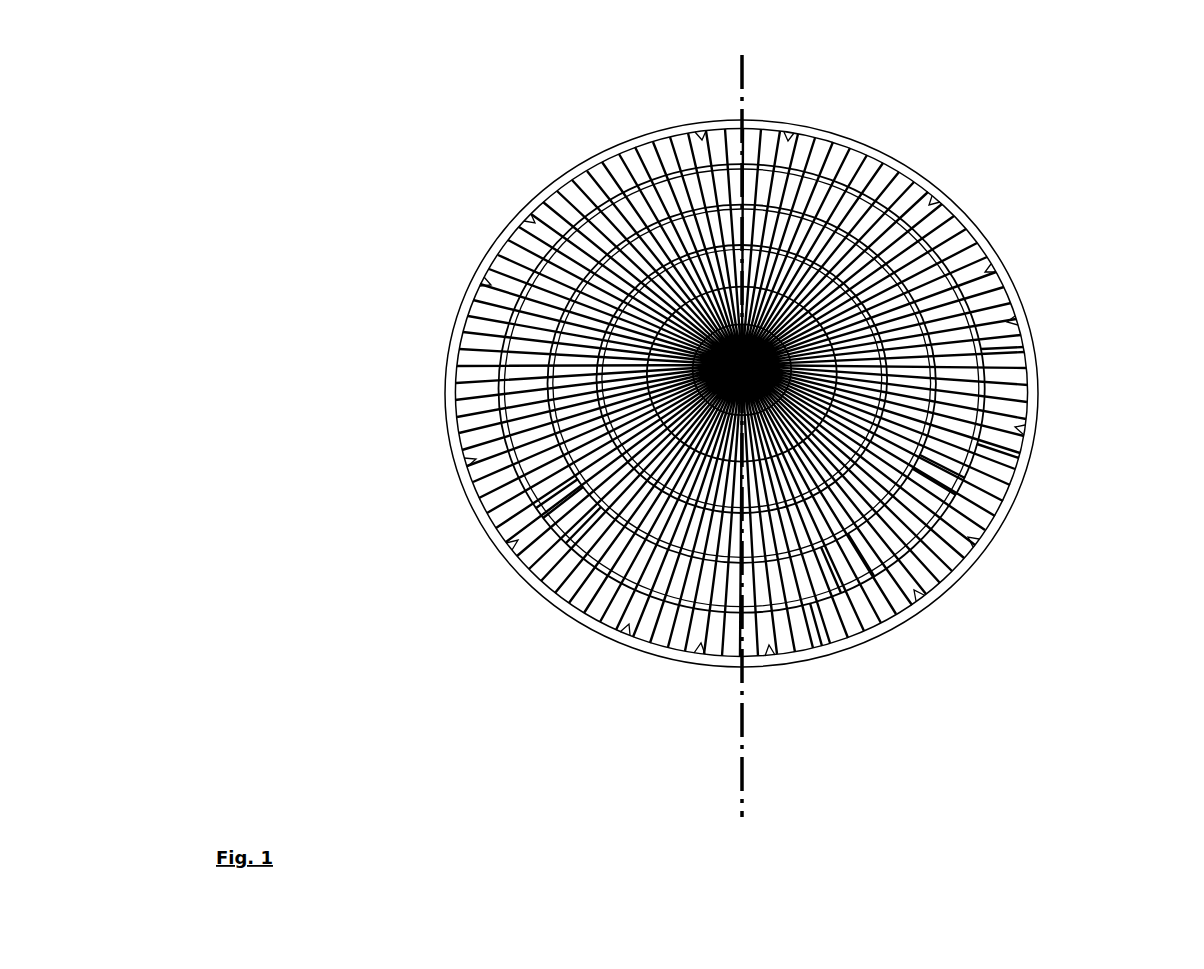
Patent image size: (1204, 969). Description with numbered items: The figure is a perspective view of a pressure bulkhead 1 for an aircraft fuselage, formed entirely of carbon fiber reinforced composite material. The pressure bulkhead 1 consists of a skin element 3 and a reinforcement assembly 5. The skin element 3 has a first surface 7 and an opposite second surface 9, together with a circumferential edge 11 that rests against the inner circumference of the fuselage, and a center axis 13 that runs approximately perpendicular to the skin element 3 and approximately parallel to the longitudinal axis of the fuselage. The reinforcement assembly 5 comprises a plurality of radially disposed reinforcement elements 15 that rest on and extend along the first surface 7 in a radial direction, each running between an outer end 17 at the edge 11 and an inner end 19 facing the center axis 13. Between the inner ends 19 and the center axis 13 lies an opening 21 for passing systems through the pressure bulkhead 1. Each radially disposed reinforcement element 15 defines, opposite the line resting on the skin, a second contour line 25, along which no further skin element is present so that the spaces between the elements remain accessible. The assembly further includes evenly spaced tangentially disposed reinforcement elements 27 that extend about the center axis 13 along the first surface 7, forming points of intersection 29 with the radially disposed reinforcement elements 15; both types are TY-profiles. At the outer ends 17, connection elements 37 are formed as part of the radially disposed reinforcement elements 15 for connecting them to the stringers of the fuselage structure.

The pressure bulkhead 1 is at (416, 212).
The skin element 3 is at (819, 633).
The reinforcement assembly 5 is at (741, 392).
The first surface 7 is at (710, 651).
The second surface 9 is at (632, 664).
The circumferential edge 11 is at (1023, 313).
The center axis 13 is at (748, 72).
The radially disposed reinforcement elements 15 is at (1005, 453).
The outer end 17 is at (1008, 290).
The inner end 19 is at (745, 363).
The opening 21 is at (744, 364).
The second contour line 25 is at (587, 540).
The tangentially disposed reinforcement elements 27 is at (968, 477).
The points of intersection 29 is at (560, 548).
The connection elements 37 is at (920, 595).